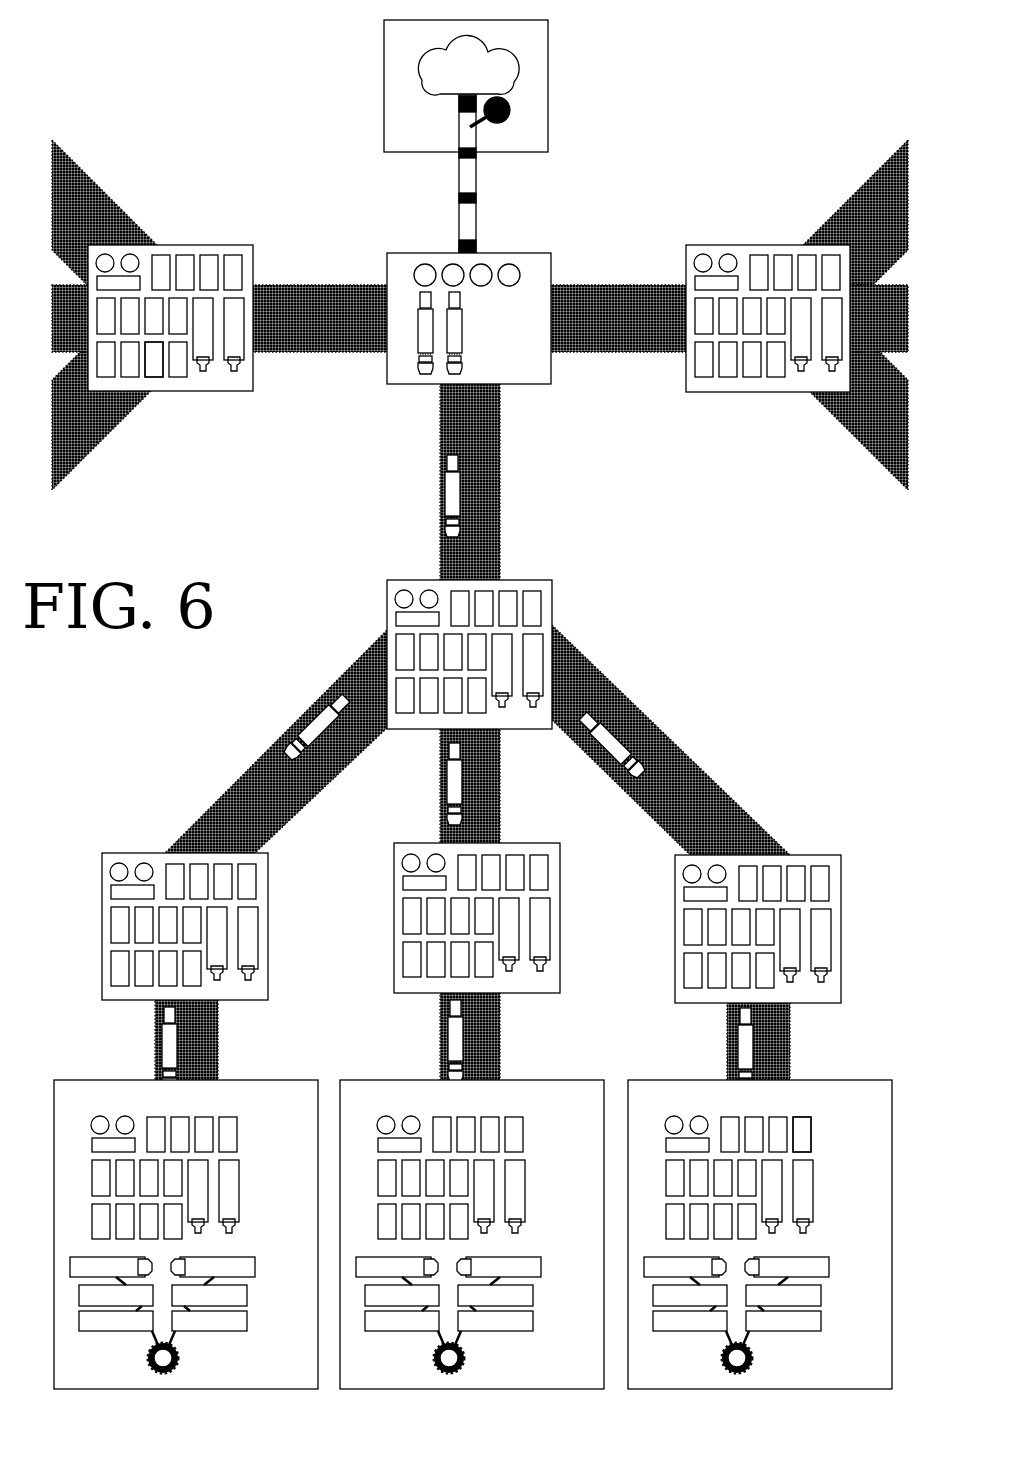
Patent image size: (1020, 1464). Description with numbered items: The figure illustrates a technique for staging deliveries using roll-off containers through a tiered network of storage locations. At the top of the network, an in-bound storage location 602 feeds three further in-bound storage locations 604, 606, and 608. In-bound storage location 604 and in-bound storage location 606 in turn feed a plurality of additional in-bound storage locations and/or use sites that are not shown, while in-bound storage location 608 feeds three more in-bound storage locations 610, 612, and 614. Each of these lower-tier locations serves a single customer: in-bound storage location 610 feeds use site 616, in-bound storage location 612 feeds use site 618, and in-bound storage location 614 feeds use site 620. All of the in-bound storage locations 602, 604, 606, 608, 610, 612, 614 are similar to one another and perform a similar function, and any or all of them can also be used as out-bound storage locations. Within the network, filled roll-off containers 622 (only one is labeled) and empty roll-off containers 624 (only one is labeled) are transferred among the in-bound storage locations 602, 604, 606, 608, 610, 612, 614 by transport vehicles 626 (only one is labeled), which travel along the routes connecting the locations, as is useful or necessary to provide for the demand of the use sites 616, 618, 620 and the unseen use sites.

The in-bound storage location 602 is at (522, 385).
The in-bound storage location 604 is at (228, 391).
The in-bound storage location 606 is at (722, 393).
The in-bound storage location 608 is at (535, 732).
The in-bound storage location 610 is at (258, 1002).
The in-bound storage location 612 is at (542, 995).
The in-bound storage location 614 is at (828, 1005).
The use site 616 is at (294, 1126).
The use site 618 is at (582, 1126).
The use site 620 is at (876, 1126).
The filled roll-off container 622 is at (156, 377).
The empty roll-off container 624 is at (812, 1132).
The transport vehicle 626 is at (600, 752).